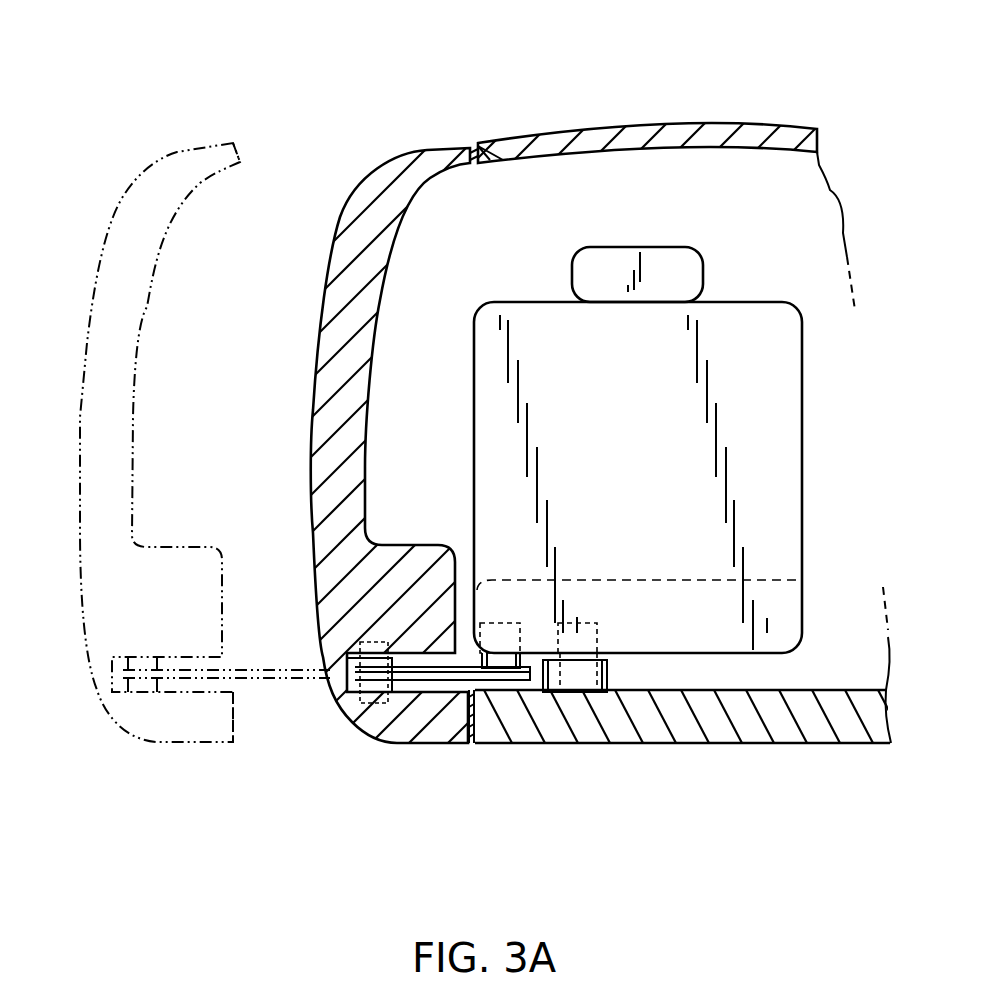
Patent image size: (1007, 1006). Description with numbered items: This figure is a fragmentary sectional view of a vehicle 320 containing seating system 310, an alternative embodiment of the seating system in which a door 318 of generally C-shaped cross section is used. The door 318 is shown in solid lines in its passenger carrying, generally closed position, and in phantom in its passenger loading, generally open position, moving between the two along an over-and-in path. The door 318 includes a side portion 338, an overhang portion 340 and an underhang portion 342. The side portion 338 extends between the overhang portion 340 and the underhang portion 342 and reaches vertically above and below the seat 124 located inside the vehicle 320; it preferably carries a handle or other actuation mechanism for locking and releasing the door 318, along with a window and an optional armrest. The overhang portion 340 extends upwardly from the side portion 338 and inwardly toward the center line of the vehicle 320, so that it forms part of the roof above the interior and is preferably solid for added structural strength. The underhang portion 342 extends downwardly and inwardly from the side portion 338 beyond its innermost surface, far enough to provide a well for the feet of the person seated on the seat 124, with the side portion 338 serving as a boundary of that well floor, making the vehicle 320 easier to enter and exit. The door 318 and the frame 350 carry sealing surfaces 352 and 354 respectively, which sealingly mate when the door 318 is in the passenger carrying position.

The seat 124 is at (788, 300).
The seating system 310 is at (303, 105).
The door 318 is at (143, 174).
The vehicle 320 is at (683, 121).
The side portion 338 is at (311, 480).
The overhang portion 340 is at (430, 147).
The underhang portion 342 is at (453, 740).
The frame 350 is at (692, 745).
The sealing surface 352 is at (236, 143).
The sealing surface 354 is at (507, 157).